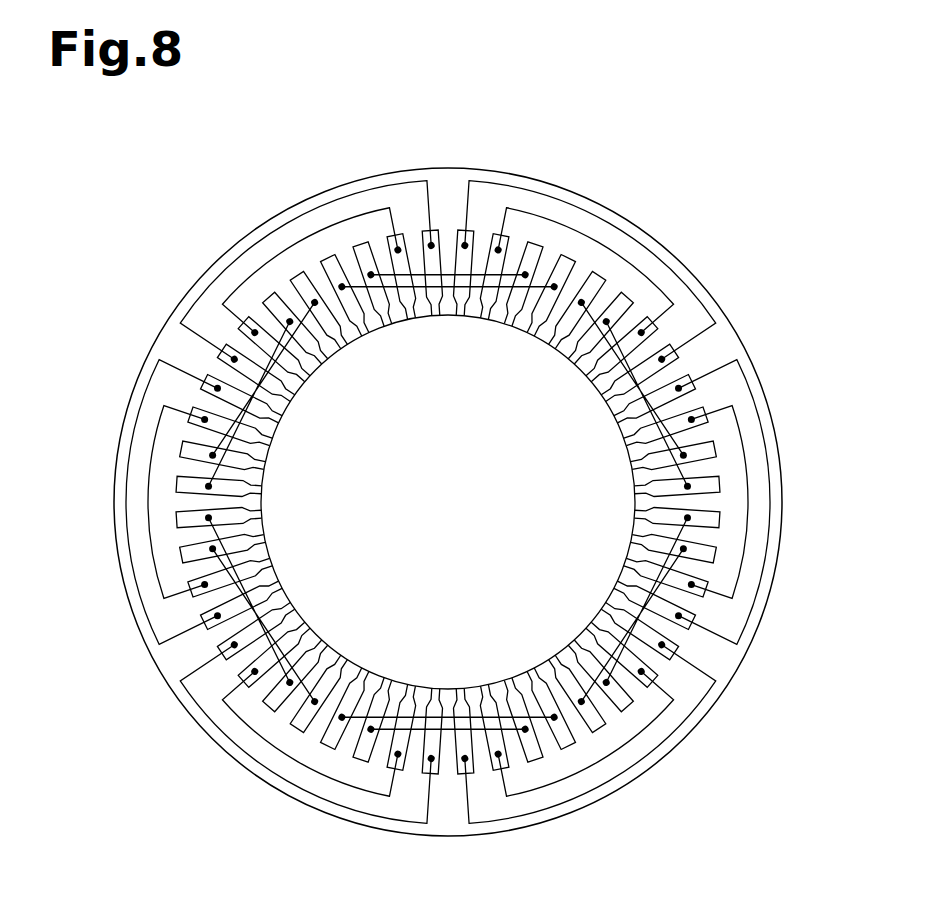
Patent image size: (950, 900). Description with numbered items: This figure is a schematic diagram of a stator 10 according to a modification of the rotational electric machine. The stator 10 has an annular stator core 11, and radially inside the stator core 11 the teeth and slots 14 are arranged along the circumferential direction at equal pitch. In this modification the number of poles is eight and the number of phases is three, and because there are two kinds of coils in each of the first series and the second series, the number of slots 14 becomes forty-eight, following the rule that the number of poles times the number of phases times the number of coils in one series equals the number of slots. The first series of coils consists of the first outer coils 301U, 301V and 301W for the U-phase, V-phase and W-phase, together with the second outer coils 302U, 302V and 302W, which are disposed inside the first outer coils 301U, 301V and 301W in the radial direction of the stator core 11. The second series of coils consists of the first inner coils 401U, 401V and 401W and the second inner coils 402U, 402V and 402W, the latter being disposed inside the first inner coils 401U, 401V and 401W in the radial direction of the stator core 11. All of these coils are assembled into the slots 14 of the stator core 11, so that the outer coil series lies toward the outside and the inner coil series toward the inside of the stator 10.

The stator 10 is at (707, 254).
The stator core 11 is at (742, 338).
The slot 14 is at (513, 302).
The first outer coil 301U is at (562, 202).
The second outer coil 302U is at (588, 232).
The first outer coil 301V is at (765, 453).
The second outer coil 302V is at (750, 491).
The first outer coil 301W is at (285, 226).
The second outer coil 302W is at (258, 267).
The first inner coil 401U is at (268, 434).
The second inner coil 402U is at (265, 467).
The first inner coil 401V is at (423, 304).
The second inner coil 402V is at (374, 330).
The first inner coil 401W is at (617, 405).
The second inner coil 402W is at (623, 432).